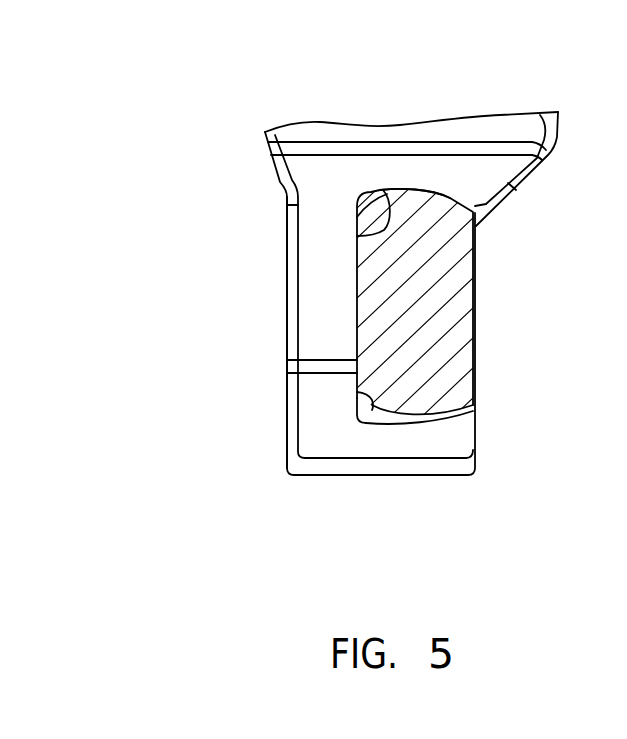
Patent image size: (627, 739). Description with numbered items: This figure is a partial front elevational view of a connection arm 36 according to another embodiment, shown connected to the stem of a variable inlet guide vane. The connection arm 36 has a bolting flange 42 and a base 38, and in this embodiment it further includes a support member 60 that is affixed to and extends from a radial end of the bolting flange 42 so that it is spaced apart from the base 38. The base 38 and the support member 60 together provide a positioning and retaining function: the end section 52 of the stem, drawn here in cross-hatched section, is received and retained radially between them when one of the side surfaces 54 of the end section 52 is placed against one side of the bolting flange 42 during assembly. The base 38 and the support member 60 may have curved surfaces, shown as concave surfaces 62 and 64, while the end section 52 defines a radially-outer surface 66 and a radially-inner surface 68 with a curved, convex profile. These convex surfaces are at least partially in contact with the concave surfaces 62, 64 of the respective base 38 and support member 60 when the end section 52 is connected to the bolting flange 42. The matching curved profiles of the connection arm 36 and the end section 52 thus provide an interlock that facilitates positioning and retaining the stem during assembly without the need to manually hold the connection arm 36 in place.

The connection arm 36 is at (310, 110).
The base 38 is at (330, 160).
The bolting flange 42 is at (295, 294).
The end section 52 is at (370, 332).
The side surface 54 is at (474, 343).
The support member 60 is at (340, 465).
The concave surface 62 is at (362, 237).
The concave surface 64 is at (360, 393).
The radially-outer surface 66 is at (410, 190).
The radially-inner surface 68 is at (412, 420).